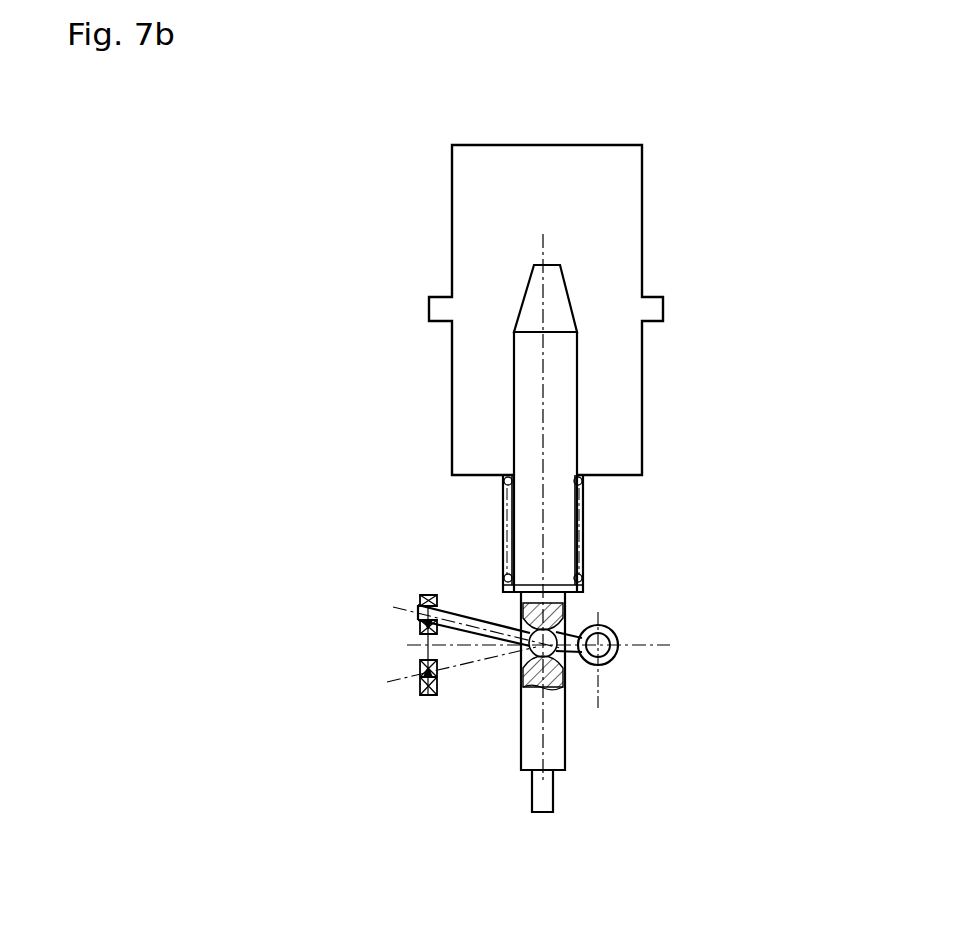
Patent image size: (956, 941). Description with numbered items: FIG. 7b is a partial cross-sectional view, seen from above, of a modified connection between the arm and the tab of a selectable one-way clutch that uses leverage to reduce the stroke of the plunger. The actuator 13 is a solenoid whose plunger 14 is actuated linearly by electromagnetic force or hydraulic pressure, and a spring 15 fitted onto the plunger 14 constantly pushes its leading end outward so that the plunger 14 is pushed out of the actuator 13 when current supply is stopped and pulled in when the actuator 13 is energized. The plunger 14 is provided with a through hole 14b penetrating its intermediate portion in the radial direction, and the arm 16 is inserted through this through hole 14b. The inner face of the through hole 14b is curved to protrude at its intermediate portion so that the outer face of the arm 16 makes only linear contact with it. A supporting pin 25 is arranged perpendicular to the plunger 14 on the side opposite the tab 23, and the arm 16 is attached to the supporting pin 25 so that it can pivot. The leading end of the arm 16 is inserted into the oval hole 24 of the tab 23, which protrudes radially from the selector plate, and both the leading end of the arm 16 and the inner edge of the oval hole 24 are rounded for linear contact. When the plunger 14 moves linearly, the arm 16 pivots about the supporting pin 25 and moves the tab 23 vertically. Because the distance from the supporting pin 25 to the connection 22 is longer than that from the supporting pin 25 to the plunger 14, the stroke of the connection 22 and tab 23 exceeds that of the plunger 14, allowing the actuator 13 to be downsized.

The actuator 13 is at (642, 218).
The plunger 14 is at (568, 407).
The through hole 14b is at (520, 652).
The spring 15 is at (583, 535).
The arm 16 is at (480, 612).
The connection 22 is at (392, 633).
The tab 23 is at (430, 597).
The oval hole 24 is at (418, 682).
The supporting pin 25 is at (616, 638).